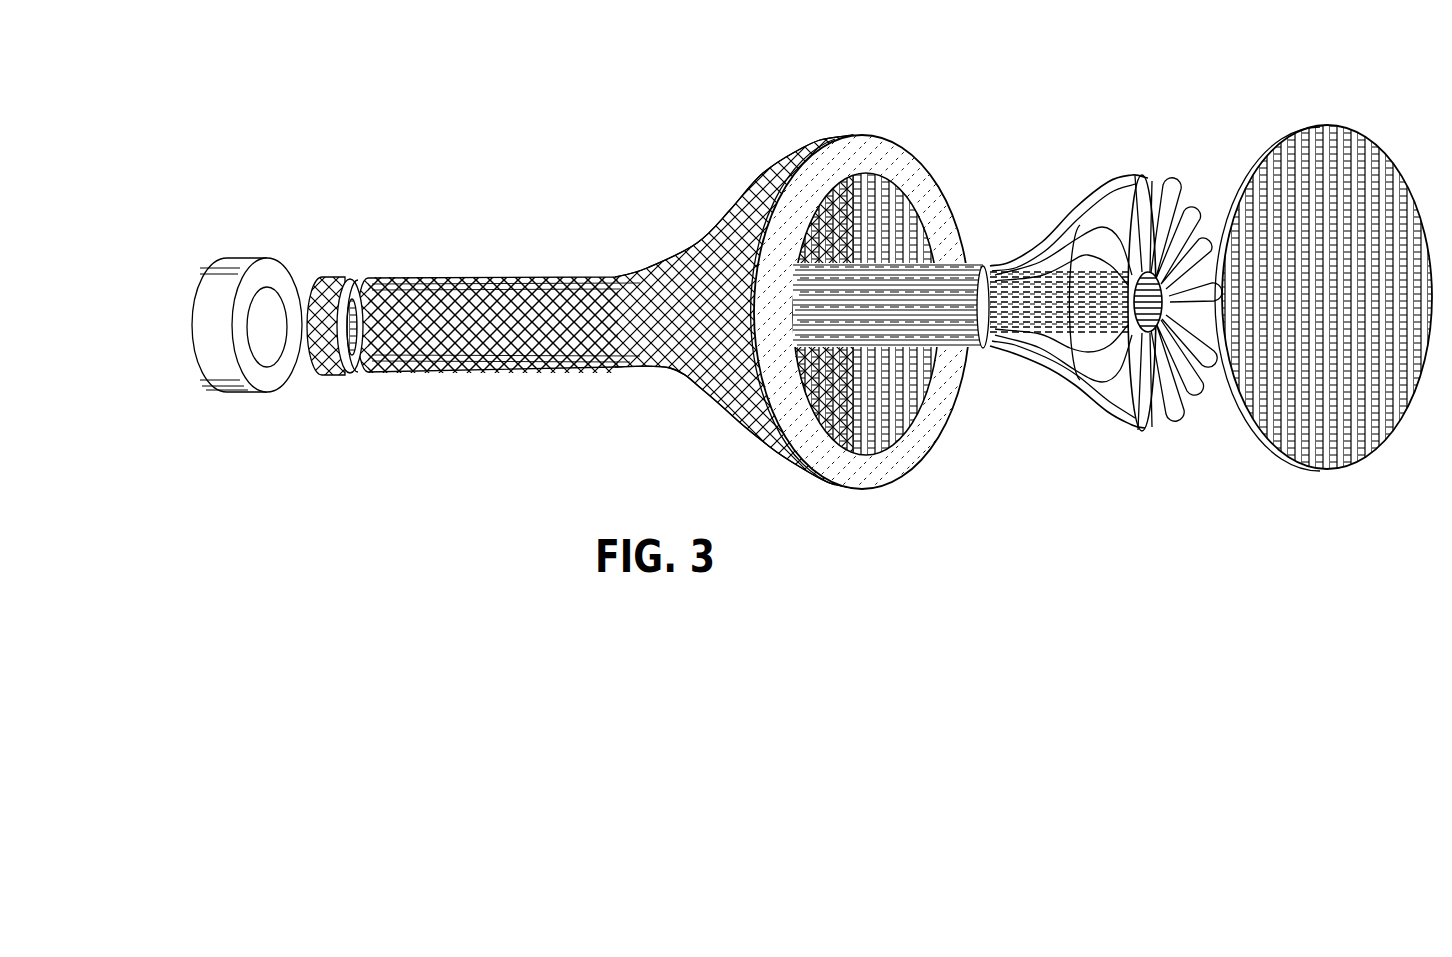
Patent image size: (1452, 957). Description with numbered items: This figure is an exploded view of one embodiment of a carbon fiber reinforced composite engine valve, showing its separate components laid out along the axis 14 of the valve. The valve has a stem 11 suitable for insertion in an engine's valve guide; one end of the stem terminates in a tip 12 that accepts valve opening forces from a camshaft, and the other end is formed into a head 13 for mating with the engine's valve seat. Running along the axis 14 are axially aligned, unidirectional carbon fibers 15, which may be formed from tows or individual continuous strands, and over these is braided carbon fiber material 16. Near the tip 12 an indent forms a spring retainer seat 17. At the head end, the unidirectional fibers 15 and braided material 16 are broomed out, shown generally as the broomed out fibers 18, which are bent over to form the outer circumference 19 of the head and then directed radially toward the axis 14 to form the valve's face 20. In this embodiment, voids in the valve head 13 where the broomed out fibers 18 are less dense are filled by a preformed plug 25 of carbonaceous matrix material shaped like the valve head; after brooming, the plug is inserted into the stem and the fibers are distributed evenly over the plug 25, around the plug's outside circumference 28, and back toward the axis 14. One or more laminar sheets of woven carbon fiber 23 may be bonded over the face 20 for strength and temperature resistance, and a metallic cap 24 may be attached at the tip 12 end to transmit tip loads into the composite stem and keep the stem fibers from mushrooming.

The stem 11 is at (605, 311).
The tip 12 is at (312, 297).
The head 13 is at (780, 187).
The axis 14 is at (138, 333).
The axially aligned unidirectional carbon fibers 15 is at (980, 347).
The braided carbon fiber material 16 is at (577, 317).
The spring retainer seat 17 is at (357, 283).
The broomed out fibers 18 is at (743, 413).
The outer circumference of the head 19 is at (847, 135).
The valve face 20 is at (933, 173).
The laminar sheets of woven carbon fiber 23 is at (1310, 468).
The metallic cap 24 is at (247, 232).
The preformed plug 25 is at (1120, 393).
The plug's outside circumference 28 is at (1175, 413).